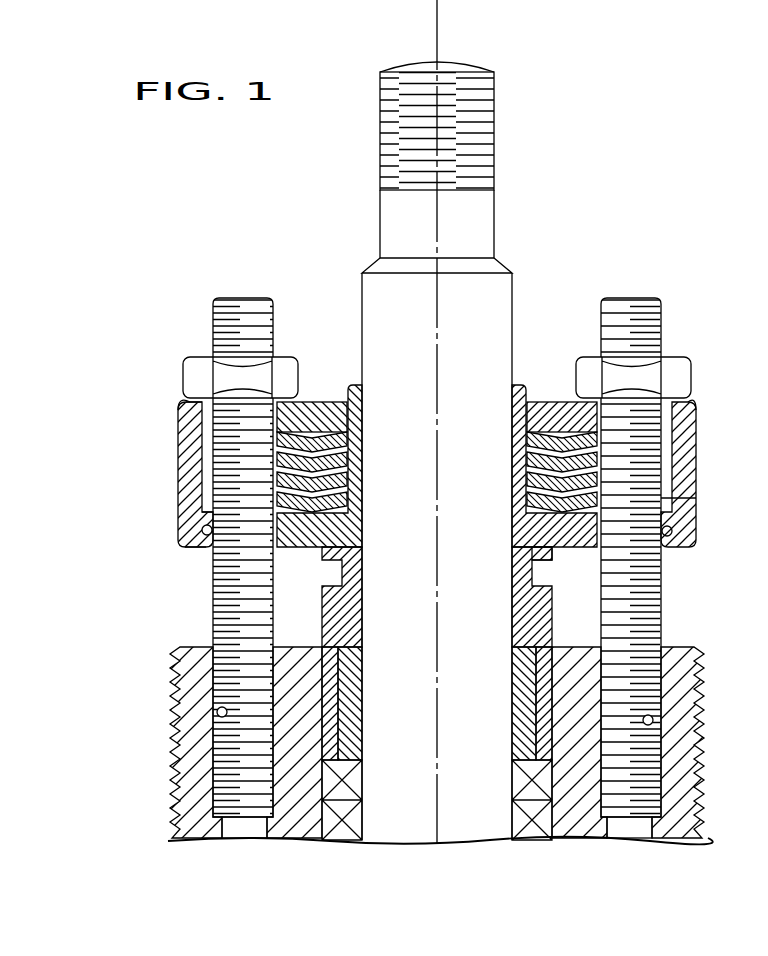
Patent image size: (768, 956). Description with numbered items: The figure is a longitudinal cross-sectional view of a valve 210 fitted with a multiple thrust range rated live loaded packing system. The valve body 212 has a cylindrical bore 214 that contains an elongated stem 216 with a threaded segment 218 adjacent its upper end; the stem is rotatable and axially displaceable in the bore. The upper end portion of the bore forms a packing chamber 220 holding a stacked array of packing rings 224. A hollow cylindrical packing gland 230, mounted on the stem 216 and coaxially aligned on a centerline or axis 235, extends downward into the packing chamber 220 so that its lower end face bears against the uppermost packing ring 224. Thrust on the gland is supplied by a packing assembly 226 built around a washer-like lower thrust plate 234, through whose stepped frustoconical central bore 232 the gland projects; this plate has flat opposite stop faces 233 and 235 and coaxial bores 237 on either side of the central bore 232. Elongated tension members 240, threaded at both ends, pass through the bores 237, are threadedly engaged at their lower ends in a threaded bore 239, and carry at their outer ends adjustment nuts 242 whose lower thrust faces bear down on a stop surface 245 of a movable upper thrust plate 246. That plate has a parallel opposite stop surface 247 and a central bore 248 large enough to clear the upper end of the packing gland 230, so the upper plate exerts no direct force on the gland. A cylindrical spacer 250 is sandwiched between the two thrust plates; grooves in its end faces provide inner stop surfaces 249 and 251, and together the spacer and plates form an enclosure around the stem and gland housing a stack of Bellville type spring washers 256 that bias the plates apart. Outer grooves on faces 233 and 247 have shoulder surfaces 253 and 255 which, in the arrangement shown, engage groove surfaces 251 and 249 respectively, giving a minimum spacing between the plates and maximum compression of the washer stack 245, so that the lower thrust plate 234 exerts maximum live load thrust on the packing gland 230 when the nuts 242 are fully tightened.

The valve 210 is at (455, 877).
The valve body 212 is at (682, 838).
The cylindrical bore 214 is at (540, 835).
The elongated stem 216 is at (425, 517).
The threaded segment 218 is at (462, 104).
The packing chamber 220 is at (512, 822).
The packing rings 224 is at (360, 822).
The packing assembly 226 is at (705, 386).
The packing gland 230 is at (540, 617).
The central bore 232 is at (560, 546).
The stop face 233 is at (600, 498).
The thrust plate 234 is at (300, 548).
The axis 235 is at (438, 42).
The bores 237 is at (205, 481).
The threaded bore 239 is at (217, 714).
The tension members 240 is at (245, 298).
The adjustment nut 242 is at (192, 373).
The stop surface 245 is at (312, 430).
The upper thrust plate 246 is at (205, 423).
The stop surface 247 is at (305, 440).
The central bore 248 is at (530, 410).
The inner stop surface 249 is at (188, 403).
The cylindrical spacer 250 is at (697, 442).
The inner stop surface 251 is at (200, 550).
The shoulder surface 253 is at (205, 520).
The shoulder surface 255 is at (200, 416).
The spring washers 256 is at (545, 498).